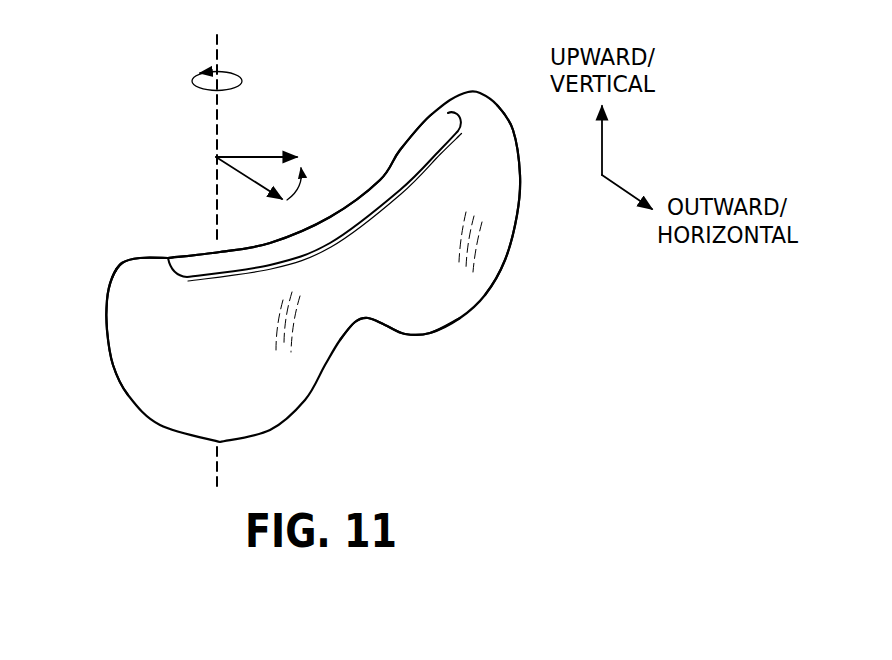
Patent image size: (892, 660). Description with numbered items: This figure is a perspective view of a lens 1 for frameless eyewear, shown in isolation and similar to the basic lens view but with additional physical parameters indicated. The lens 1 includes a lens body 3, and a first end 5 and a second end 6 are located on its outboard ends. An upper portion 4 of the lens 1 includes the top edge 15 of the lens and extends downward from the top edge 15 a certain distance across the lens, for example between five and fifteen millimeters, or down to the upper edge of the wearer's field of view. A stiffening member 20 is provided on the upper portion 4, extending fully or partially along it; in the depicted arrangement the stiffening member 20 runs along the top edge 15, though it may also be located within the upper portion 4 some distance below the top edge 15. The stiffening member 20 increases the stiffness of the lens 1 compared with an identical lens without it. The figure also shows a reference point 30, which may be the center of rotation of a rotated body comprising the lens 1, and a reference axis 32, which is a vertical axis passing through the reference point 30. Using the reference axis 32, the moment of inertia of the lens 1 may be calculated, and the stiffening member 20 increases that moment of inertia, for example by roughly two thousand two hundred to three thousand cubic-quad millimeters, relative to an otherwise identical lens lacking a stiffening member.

The lens 1 is at (326, 266).
The lens body 3 is at (338, 337).
The upper portion 4 is at (168, 261).
The first end 5 is at (107, 333).
The second end 6 is at (522, 161).
The top edge 15 is at (360, 197).
The stiffening member 20 is at (407, 167).
The reference point 30 is at (218, 157).
The reference axis 32 is at (214, 57).